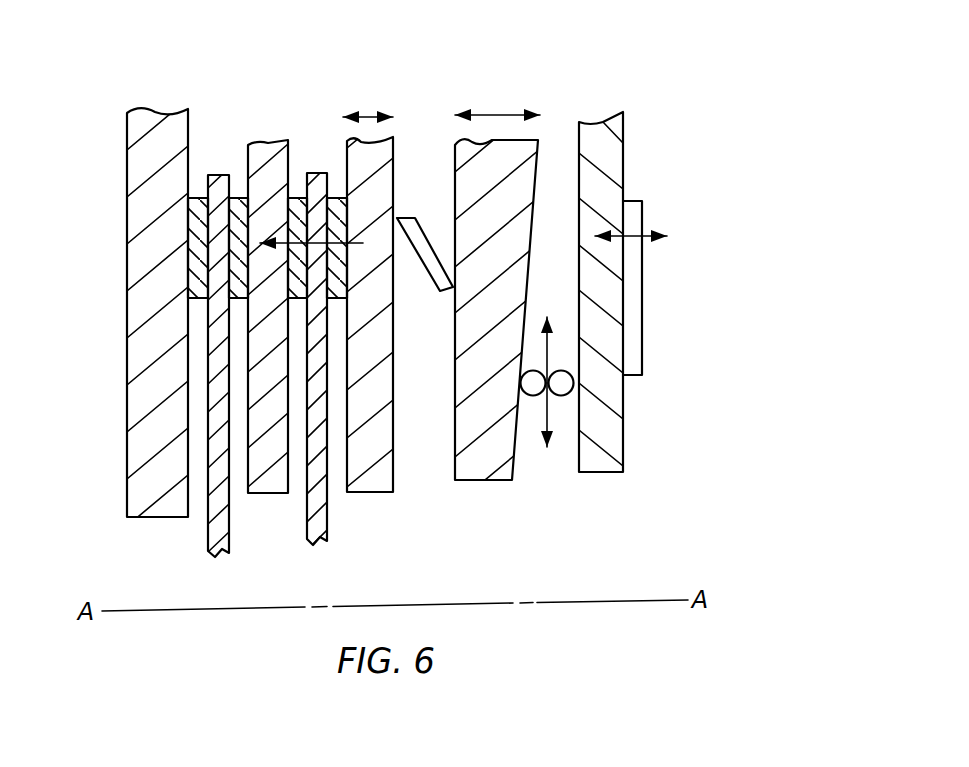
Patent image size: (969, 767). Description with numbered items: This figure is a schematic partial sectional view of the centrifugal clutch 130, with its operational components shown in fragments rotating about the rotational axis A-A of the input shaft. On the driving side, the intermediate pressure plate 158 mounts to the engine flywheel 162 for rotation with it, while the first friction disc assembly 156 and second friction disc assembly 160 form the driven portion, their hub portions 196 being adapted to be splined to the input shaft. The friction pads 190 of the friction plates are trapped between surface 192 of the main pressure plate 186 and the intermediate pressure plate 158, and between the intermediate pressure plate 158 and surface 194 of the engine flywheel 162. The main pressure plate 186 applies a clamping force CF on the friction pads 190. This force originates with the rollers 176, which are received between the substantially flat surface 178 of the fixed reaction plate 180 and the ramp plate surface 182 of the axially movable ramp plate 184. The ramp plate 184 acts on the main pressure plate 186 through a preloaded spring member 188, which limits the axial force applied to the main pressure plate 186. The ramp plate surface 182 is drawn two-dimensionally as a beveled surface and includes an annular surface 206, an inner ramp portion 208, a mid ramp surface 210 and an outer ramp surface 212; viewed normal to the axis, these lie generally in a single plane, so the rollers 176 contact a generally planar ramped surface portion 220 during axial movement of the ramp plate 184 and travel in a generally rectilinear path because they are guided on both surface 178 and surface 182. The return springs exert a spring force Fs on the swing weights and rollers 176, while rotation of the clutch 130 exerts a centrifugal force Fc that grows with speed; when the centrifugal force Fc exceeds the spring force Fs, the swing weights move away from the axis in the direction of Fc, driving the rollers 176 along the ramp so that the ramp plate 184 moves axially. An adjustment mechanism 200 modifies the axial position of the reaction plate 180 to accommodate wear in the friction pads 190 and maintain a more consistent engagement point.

The centrifugal clutch 130 is at (438, 70).
The first friction disc assembly 156 is at (345, 92).
The intermediate pressure plate 158 is at (265, 495).
The second friction disc assembly 160 is at (262, 102).
The engine flywheel 162 is at (137, 231).
The rollers 176 is at (576, 385).
The substantially flat surface 178 is at (579, 133).
The fixed reaction plate 180 is at (615, 158).
The ramp plate surface 182 is at (514, 464).
The ramp plate 184 is at (495, 98).
The main pressure plate 186 is at (366, 492).
The preloaded spring member 188 is at (423, 258).
The friction pads 190 is at (241, 201).
The surface of main pressure plate 192 is at (345, 346).
The surface of engine flywheel 194 is at (201, 200).
The hub portions 196 is at (207, 530).
The adjustment mechanism 200 is at (632, 298).
The annular surface 206 is at (515, 452).
The inner ramp portion 208 is at (525, 333).
The mid ramp surface 210 is at (533, 288).
The outer ramp surface 212 is at (540, 193).
The generally planar ramped surface portion 220 is at (530, 308).
The clamping force CF is at (347, 197).
The centrifugal force Fc is at (550, 360).
The spring force Fs is at (551, 417).